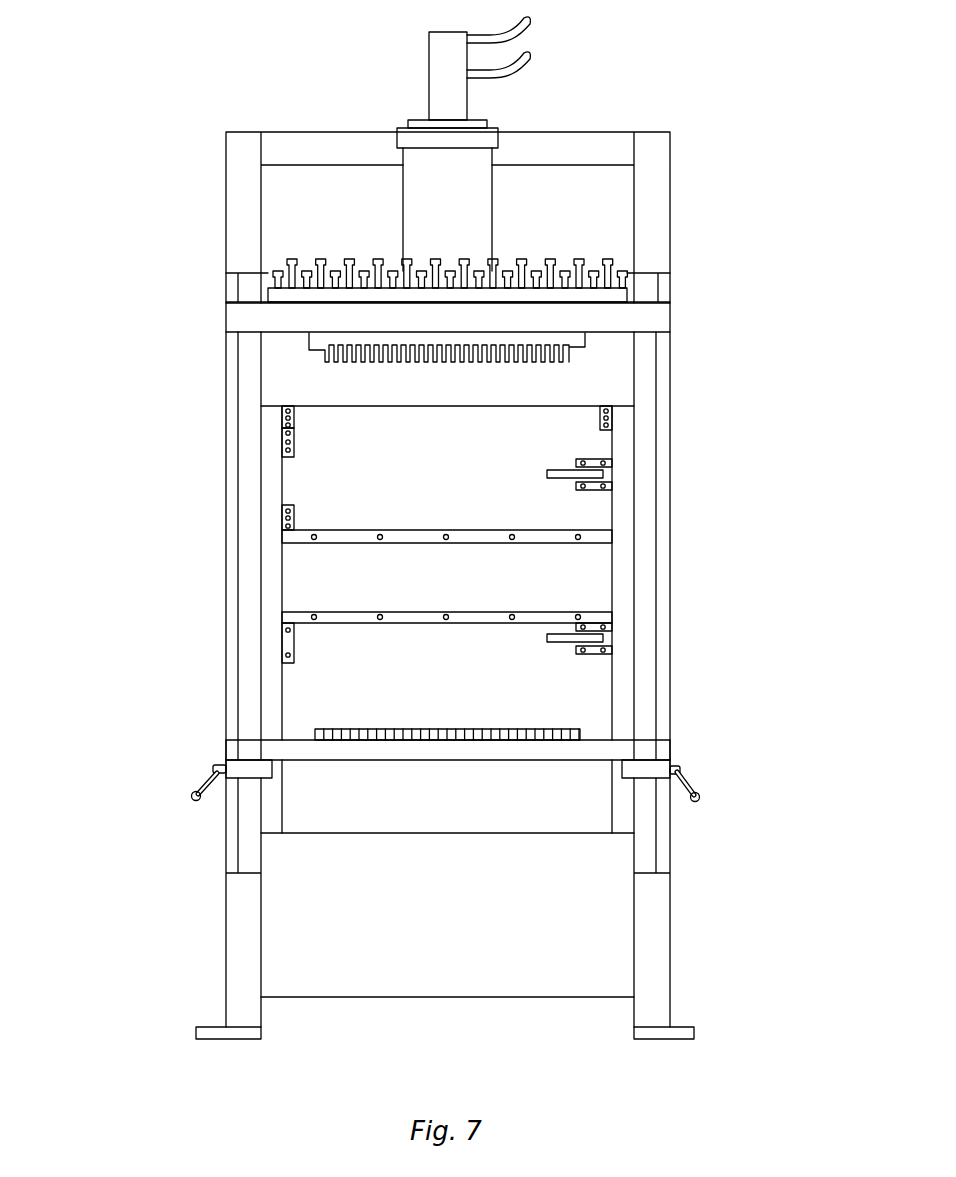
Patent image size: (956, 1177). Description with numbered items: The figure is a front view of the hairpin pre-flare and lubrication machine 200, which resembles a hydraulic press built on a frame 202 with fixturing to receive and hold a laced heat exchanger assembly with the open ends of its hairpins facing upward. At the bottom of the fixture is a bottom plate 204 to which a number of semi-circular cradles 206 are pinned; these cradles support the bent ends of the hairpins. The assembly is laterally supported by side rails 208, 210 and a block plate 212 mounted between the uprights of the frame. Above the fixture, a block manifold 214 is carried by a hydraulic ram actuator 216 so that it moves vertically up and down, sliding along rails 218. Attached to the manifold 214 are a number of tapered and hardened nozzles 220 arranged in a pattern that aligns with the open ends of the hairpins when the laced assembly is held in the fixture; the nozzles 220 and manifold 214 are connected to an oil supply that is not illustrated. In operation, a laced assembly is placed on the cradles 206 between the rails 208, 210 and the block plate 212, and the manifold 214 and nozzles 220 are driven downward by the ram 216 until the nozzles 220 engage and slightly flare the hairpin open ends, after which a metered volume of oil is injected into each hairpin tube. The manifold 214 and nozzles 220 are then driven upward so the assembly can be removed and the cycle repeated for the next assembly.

The hairpin pre-flare and lubrication machine 200 is at (180, 105).
The frame 202 is at (668, 916).
The bottom plate 204 is at (327, 760).
The semi-circular cradles 206 is at (320, 728).
The side rail 208 is at (612, 516).
The side rail 210 is at (282, 489).
The block plate 212 is at (302, 578).
The block manifold 214 is at (609, 333).
The hydraulic ram actuator 216 is at (493, 198).
The rails 218 is at (238, 418).
The tapered and hardened nozzles 220 is at (312, 355).